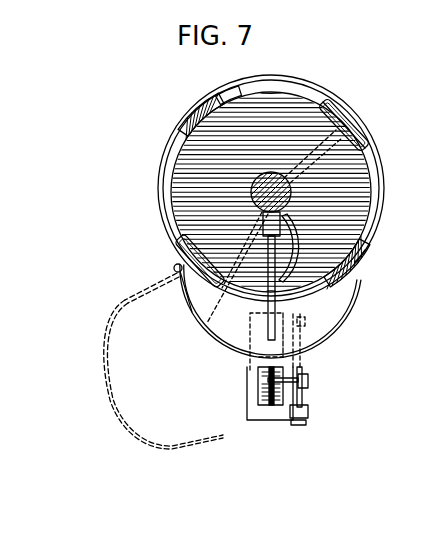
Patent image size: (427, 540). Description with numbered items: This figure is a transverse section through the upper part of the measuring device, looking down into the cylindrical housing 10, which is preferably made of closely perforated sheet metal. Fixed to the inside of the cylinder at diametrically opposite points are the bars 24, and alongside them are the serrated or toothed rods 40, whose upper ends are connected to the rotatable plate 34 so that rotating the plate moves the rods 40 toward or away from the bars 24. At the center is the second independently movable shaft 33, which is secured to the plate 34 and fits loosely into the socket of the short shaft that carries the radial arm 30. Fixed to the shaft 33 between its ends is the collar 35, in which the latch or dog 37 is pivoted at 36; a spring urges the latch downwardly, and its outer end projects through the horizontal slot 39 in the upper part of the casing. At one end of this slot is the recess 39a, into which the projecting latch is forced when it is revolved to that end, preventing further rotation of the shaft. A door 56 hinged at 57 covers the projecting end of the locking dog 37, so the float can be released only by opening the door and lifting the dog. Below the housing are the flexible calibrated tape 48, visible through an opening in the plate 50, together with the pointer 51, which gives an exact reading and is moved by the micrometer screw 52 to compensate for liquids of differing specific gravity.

The housing 10 is at (380, 157).
The bars 24 is at (186, 122).
The radial arm 30 is at (360, 250).
The second independently movable shaft 33 is at (291, 186).
The rotatable plate 34 is at (179, 175).
The collar 35 is at (358, 123).
The pivot 36 is at (262, 224).
The latch or dog 37 is at (252, 331).
The horizontal slot 39 is at (322, 300).
The recess 39a is at (142, 297).
The serrated or toothed rods 40 is at (337, 103).
The flexible calibrated tape 48 is at (275, 407).
The plate 50 is at (262, 411).
The pointer 51 is at (308, 377).
The micrometer screw 52 is at (304, 397).
The door 56 is at (121, 400).
The hinge 57 is at (175, 268).